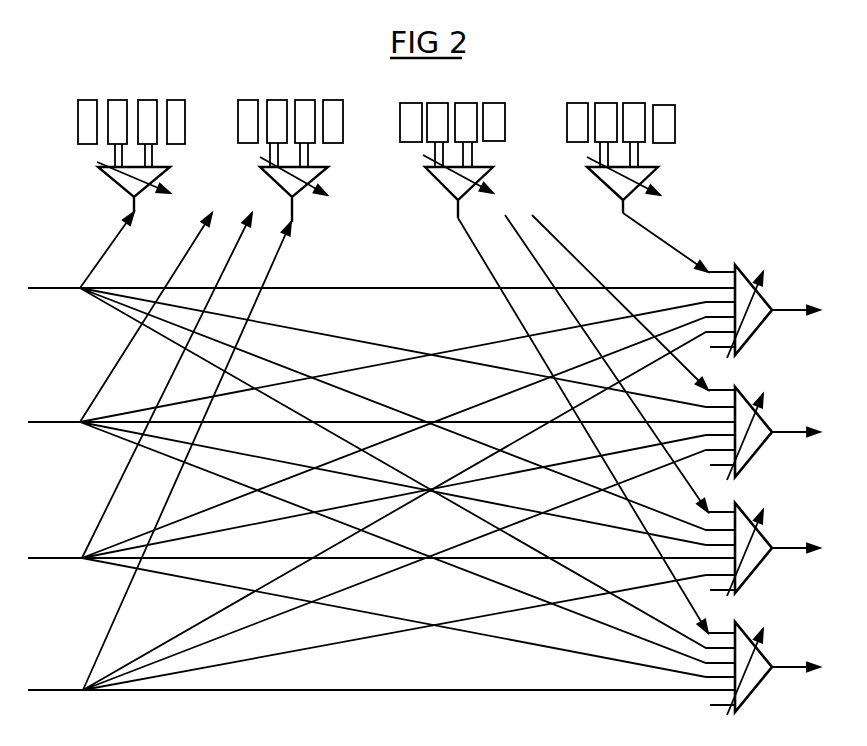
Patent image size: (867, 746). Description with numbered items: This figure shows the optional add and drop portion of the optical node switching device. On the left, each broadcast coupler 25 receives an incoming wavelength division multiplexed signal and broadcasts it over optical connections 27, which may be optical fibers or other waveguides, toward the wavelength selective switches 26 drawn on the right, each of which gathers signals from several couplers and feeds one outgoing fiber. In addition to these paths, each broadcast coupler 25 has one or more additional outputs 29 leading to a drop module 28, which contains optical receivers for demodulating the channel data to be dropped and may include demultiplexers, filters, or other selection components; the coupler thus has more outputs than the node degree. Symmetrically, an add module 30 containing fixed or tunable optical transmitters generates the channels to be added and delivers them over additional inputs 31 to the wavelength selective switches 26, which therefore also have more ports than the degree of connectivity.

The broadcast coupler 25 is at (80, 672).
The wavelength selective switch 26 is at (763, 687).
The optical connection 27 is at (265, 690).
The drop module 28 is at (353, 86).
The additional output 29 is at (107, 632).
The add module 30 is at (685, 84).
The additional input 31 is at (720, 633).